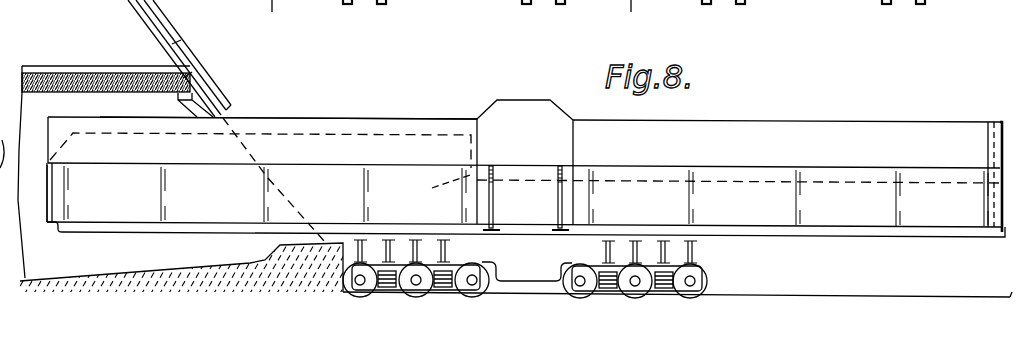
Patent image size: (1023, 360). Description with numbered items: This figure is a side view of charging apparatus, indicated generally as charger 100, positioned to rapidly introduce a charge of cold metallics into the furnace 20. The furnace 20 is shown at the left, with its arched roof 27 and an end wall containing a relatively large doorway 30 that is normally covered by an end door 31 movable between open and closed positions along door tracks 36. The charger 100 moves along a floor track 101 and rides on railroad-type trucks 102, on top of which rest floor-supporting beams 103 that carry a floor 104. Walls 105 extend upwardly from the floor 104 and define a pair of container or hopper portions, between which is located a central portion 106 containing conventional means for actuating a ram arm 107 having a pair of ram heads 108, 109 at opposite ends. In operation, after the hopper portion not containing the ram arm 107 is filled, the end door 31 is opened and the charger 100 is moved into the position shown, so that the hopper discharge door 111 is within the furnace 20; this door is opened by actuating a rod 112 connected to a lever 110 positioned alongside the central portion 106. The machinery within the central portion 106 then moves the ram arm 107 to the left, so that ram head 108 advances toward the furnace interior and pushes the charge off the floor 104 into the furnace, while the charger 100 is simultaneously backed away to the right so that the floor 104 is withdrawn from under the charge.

The furnace 20 is at (66, 276).
The arched roof 27 is at (50, 72).
The doorway 30 is at (250, 148).
The end door 31 is at (180, 46).
The door tracks 36 is at (152, 38).
The charging apparatus 100 is at (852, 113).
The floor track 101 is at (852, 297).
The railroad-type trucks 102 is at (497, 276).
The floor-supporting beams 103 is at (440, 255).
The floor 104 is at (797, 237).
The walls 105 is at (414, 118).
The central portion 106 is at (522, 123).
The ram arm 107 is at (792, 185).
The ram head 108 is at (431, 187).
The ram head 109 is at (994, 150).
The lever 110 is at (497, 176).
The hopper discharge door 111 is at (42, 180).
The rod 112 is at (298, 163).